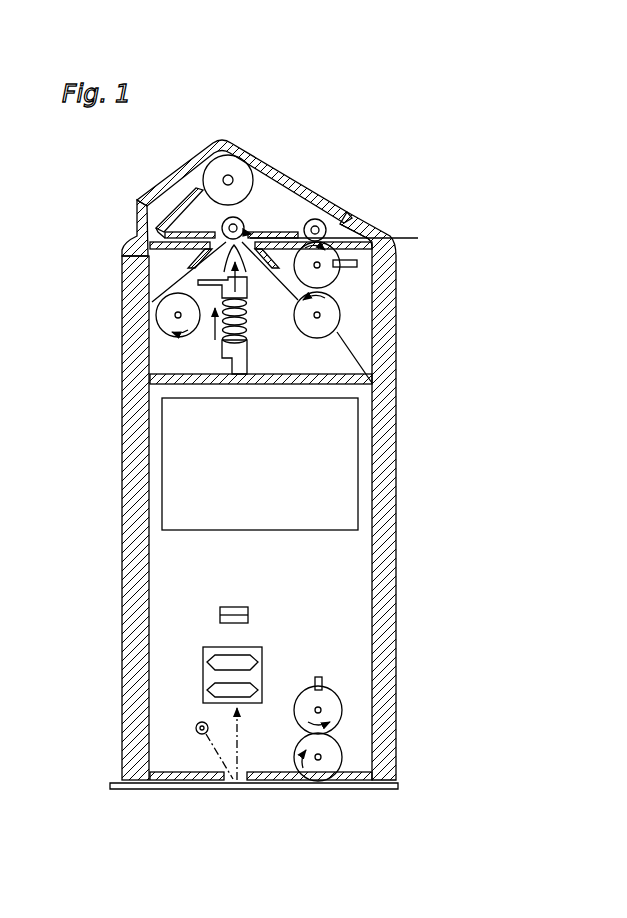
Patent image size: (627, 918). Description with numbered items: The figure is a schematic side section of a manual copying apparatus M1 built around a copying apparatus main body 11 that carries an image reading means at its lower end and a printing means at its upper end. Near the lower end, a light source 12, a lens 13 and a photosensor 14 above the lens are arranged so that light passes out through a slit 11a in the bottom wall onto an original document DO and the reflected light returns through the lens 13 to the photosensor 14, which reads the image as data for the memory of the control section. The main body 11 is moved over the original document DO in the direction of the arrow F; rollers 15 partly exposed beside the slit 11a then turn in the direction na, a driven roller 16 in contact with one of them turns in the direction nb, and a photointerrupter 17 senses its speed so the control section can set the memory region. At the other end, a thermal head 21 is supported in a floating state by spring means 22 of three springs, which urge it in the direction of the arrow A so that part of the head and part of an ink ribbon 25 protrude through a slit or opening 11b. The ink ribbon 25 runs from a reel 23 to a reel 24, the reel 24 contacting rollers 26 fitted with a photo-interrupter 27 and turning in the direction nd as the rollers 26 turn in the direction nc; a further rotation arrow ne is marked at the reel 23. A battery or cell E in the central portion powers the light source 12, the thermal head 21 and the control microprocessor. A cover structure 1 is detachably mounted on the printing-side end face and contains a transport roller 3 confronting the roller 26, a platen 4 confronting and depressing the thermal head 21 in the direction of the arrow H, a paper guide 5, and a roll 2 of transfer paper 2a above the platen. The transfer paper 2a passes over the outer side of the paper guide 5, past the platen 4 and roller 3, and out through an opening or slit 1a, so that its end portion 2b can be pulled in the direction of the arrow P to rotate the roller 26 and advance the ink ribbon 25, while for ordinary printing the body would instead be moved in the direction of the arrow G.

The cover structure 1 is at (290, 162).
The opening or slit 1a is at (374, 221).
The roll of transfer material 2 is at (243, 172).
The transfer paper 2a is at (185, 200).
The end portion of the transfer paper 2b is at (418, 243).
The transport roller 3 is at (325, 222).
The platen 4 is at (242, 222).
The paper guide 5 is at (150, 202).
The copying apparatus main body 11 is at (396, 402).
The slit 11a is at (242, 763).
The slit or opening 11b is at (250, 236).
The light source 12 is at (200, 724).
The lens 13 is at (205, 648).
The photosensor 14 is at (250, 607).
The rollers 15 is at (328, 756).
The driven roller 16 is at (333, 698).
The photointerrupter 17 is at (317, 677).
The thermal head 21 is at (241, 313).
The spring means 22 is at (228, 350).
The reel 23 is at (170, 330).
The reel 24 is at (385, 373).
The ink ribbon 25 is at (243, 262).
The rollers 26 is at (333, 280).
The photo-interrupter 27 is at (352, 268).
The arrow A is at (205, 330).
The battery or cell E is at (315, 532).
The arrow F is at (150, 795).
The arrow G is at (209, 90).
The arrow H is at (85, 322).
The arrow P is at (447, 242).
The original document DO is at (117, 798).
The manual copying apparatus M1 is at (431, 162).
The arrow na is at (324, 772).
The arrow nb is at (307, 709).
The arrow nc is at (308, 257).
The arrow nd is at (329, 307).
The rotation ne is at (189, 305).